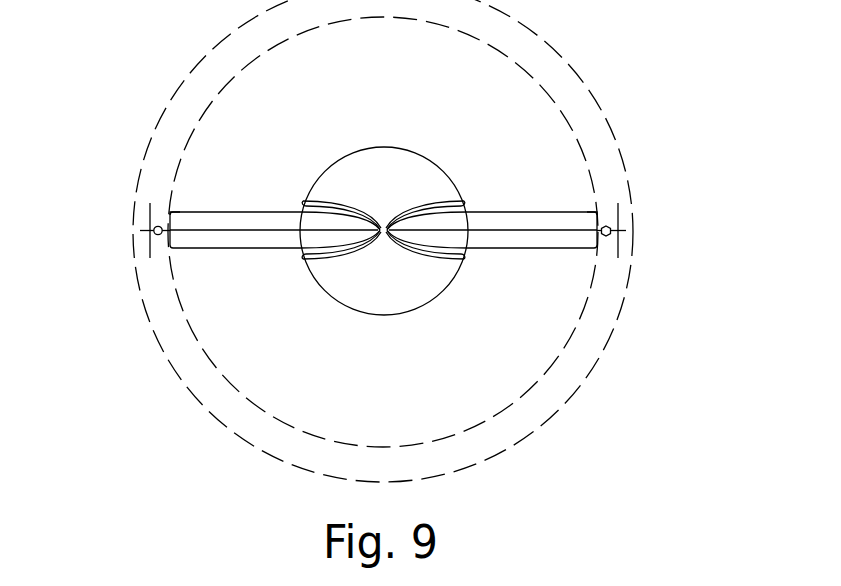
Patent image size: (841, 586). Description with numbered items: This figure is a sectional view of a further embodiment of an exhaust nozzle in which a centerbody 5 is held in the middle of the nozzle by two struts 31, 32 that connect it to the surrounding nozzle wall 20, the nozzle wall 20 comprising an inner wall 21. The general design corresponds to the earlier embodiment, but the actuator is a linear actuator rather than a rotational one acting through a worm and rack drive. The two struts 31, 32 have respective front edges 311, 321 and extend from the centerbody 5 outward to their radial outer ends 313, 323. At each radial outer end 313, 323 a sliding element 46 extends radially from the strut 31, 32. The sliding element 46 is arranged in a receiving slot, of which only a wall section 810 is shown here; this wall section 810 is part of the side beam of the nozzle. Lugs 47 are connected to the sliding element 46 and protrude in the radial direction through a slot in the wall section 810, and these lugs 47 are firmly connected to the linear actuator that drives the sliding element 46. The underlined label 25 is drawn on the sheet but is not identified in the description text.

The centerbody 5 is at (384, 315).
The nozzle wall 20 is at (573, 128).
The inner wall 21 is at (522, 63).
The clamping device assembly 25 is at (389, 94).
The strut 31 is at (212, 249).
The front edge 311 is at (255, 231).
The radial outer end 313 is at (170, 213).
The strut 32 is at (500, 249).
The front edge 321 is at (567, 231).
The radial outer end 323 is at (598, 214).
The sliding element 46 is at (158, 246).
The lugs 47 is at (150, 232).
The wall section 810 is at (148, 217).